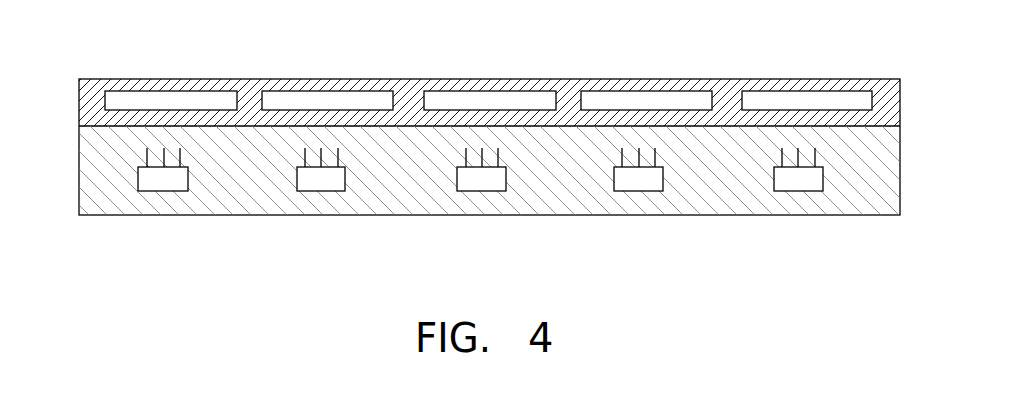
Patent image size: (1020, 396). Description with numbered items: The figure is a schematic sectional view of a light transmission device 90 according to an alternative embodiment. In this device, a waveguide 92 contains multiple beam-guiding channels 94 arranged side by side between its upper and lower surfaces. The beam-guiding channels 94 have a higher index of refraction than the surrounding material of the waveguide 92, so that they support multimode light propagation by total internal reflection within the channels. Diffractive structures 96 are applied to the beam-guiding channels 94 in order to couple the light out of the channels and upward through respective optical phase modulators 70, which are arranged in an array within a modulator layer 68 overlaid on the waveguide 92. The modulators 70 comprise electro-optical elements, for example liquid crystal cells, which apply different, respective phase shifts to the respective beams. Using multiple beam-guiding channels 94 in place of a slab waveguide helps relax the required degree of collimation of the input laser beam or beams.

The light transmission device 90 is at (852, 43).
The modulator layer 68 is at (79, 95).
The waveguide 92 is at (79, 168).
The tunable optical phase modulators 70 is at (155, 90).
The beam-guiding channels 94 is at (163, 191).
The diffractive structures 96 is at (304, 150).